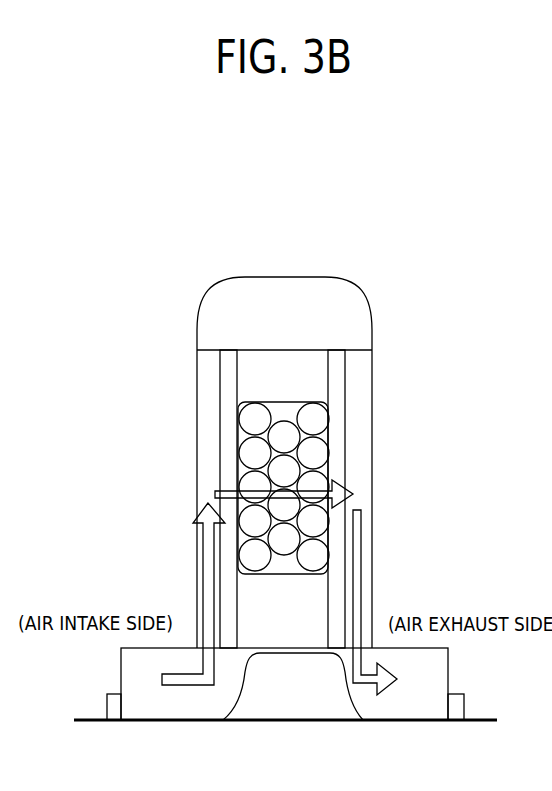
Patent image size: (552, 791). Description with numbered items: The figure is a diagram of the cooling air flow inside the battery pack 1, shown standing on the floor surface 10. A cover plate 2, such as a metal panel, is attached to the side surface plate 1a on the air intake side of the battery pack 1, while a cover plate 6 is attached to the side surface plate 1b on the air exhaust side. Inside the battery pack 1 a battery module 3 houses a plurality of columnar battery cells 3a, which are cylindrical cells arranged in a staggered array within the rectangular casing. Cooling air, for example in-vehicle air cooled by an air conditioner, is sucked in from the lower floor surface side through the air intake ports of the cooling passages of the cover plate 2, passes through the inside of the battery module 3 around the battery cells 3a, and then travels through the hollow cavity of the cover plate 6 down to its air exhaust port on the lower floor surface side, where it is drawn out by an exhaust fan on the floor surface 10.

The battery pack 1 is at (404, 294).
The side surface plate 1a is at (220, 380).
The side surface plate 1b is at (345, 368).
The cover plate 2 is at (197, 415).
The battery module 3 is at (346, 471).
The battery cell 3a is at (317, 422).
The cover plate 6 is at (372, 482).
The floor surface 10 is at (485, 718).